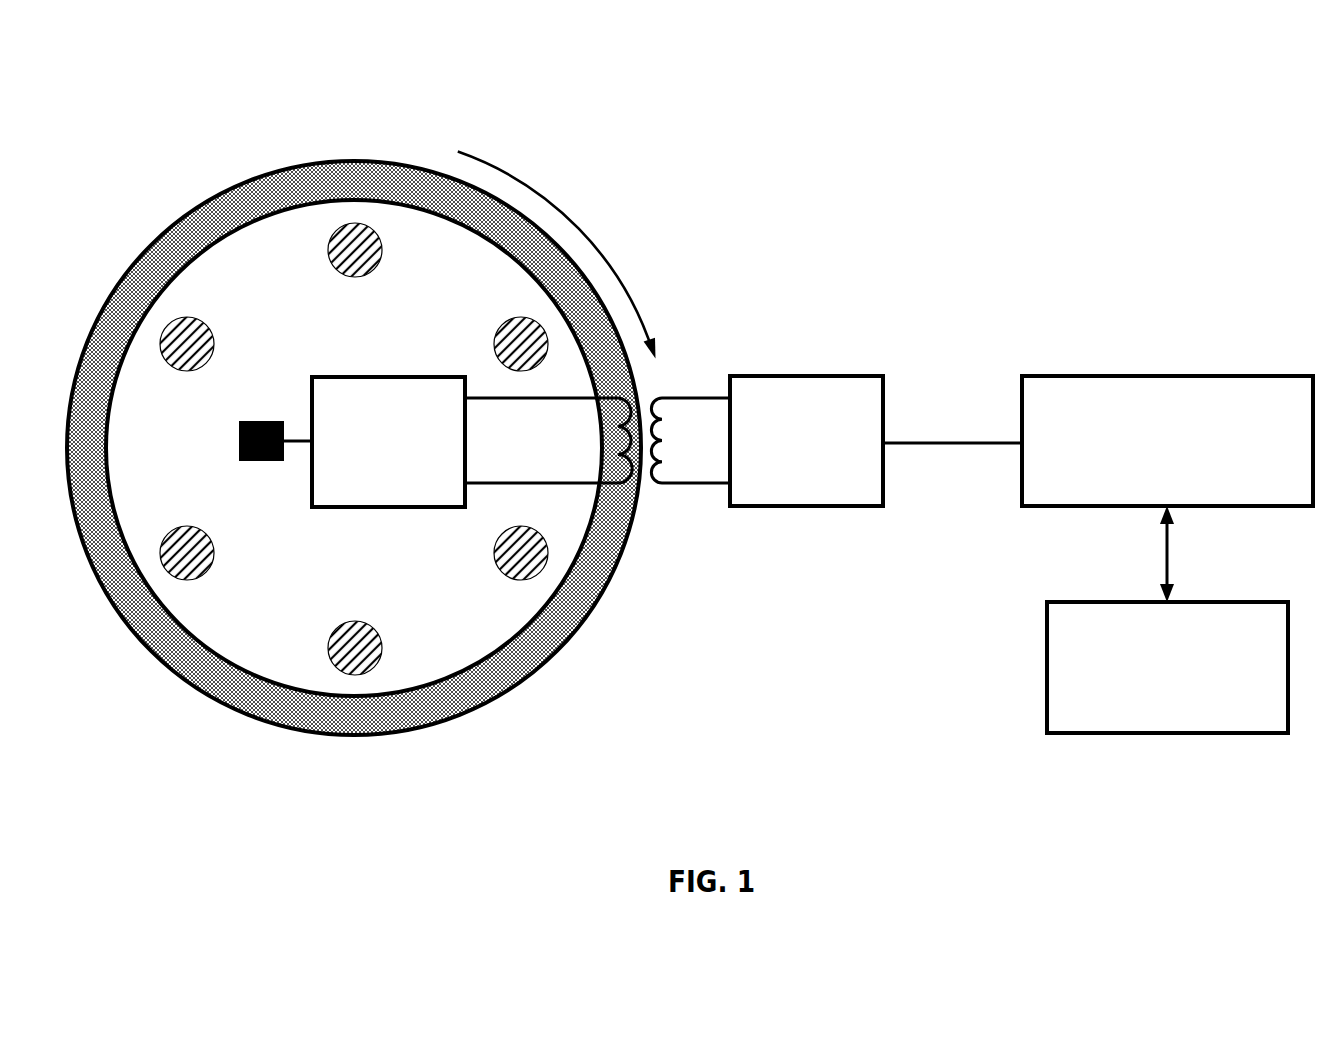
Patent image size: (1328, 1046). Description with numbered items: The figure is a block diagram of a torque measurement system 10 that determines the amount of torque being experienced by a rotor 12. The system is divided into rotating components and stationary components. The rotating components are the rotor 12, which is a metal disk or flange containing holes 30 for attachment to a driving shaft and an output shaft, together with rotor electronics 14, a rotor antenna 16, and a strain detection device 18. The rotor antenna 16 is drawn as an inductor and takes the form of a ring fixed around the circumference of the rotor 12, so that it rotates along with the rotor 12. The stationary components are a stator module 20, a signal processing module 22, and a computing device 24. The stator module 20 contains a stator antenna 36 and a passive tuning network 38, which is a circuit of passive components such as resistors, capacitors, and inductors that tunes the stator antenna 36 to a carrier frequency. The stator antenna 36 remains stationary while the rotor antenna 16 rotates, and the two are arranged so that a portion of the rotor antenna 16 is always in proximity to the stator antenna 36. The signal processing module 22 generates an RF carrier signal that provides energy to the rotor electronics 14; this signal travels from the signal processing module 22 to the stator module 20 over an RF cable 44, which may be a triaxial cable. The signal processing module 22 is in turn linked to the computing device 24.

The torque measurement system 10 is at (132, 56).
The rotor 12 is at (244, 266).
The rotor electronics 14 is at (472, 442).
The rotor antenna 16 is at (130, 262).
The strain detection device 18 is at (260, 422).
The stator module 20 is at (780, 335).
The signal processing module 22 is at (1167, 441).
The computing device 24 is at (1167, 667).
The holes 30 is at (495, 342).
The stator antenna 36 is at (677, 396).
The passive tuning network 38 is at (806, 441).
The RF cable 44 is at (960, 444).